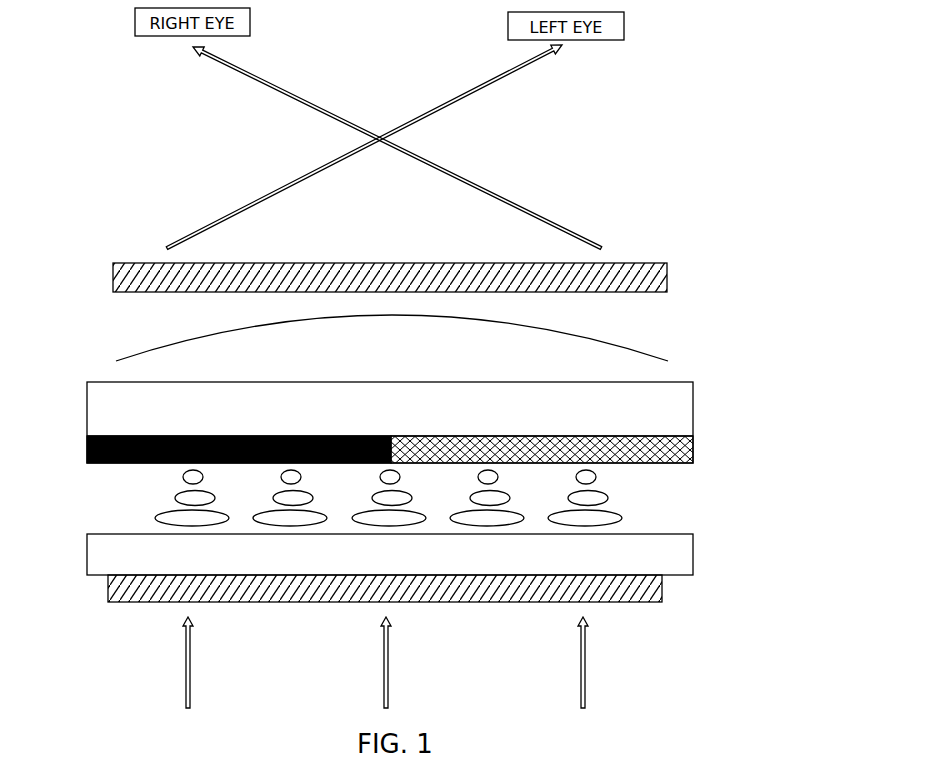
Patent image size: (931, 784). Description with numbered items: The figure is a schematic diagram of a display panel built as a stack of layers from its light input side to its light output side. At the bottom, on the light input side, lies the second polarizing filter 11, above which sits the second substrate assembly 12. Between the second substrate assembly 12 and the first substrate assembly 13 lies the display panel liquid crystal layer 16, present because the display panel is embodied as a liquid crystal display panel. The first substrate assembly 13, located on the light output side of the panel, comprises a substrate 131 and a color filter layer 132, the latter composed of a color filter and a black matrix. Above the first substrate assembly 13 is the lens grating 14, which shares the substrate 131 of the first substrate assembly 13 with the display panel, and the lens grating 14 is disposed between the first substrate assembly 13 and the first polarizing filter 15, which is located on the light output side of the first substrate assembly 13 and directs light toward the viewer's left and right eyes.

The second polarizing filter 11 is at (662, 587).
The second substrate assembly 12 is at (642, 553).
The first substrate assembly 13 is at (76, 383).
The substrate 131 is at (642, 409).
The color filter layer 132 is at (693, 448).
The lens grating 14 is at (76, 297).
The first polarizing filter 15 is at (667, 278).
The display panel liquid crystal layer 16 is at (76, 467).